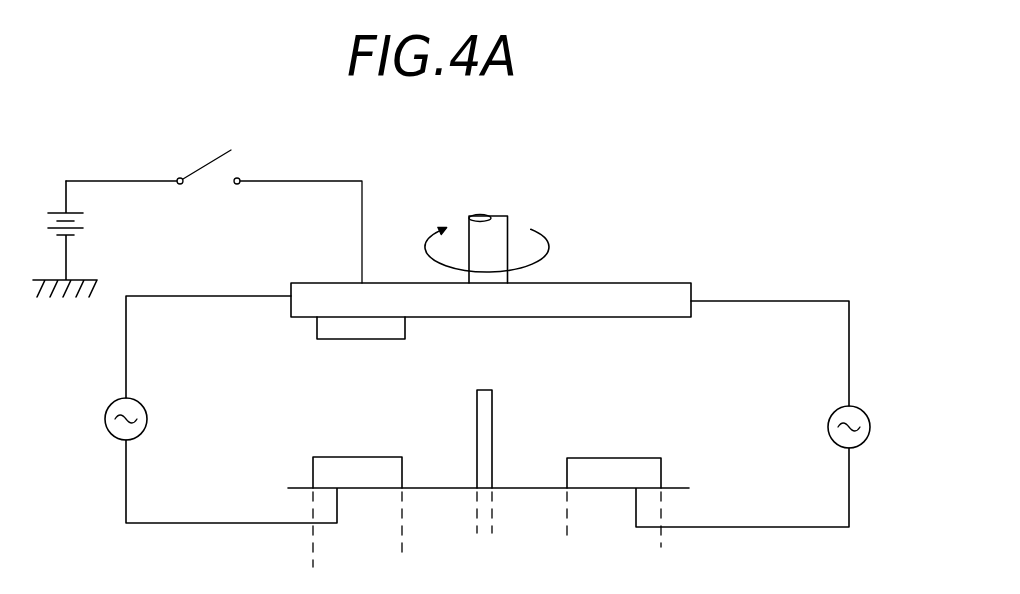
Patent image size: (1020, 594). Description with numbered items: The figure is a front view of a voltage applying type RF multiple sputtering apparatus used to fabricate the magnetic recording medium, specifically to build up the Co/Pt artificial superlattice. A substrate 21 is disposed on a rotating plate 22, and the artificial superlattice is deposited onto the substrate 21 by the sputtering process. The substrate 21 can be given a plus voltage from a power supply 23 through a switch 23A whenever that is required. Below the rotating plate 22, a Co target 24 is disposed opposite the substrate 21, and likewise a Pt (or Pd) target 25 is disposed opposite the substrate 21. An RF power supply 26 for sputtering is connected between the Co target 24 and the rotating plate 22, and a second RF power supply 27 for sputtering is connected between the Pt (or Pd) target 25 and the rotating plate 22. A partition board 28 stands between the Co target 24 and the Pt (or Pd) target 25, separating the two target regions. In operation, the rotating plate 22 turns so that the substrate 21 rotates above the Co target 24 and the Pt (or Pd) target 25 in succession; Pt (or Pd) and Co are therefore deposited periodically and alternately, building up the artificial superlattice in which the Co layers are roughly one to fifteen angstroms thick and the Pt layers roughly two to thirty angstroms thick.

The substrate 21 is at (318, 330).
The rotating plate 22 is at (603, 292).
The power supply 23 is at (63, 211).
The switch 23A is at (214, 198).
The Co target 24 is at (313, 459).
The Pt (or Pd) target 25 is at (567, 468).
The RF power supply 26 is at (108, 437).
The RF power supply 27 is at (852, 405).
The partition board 28 is at (488, 397).